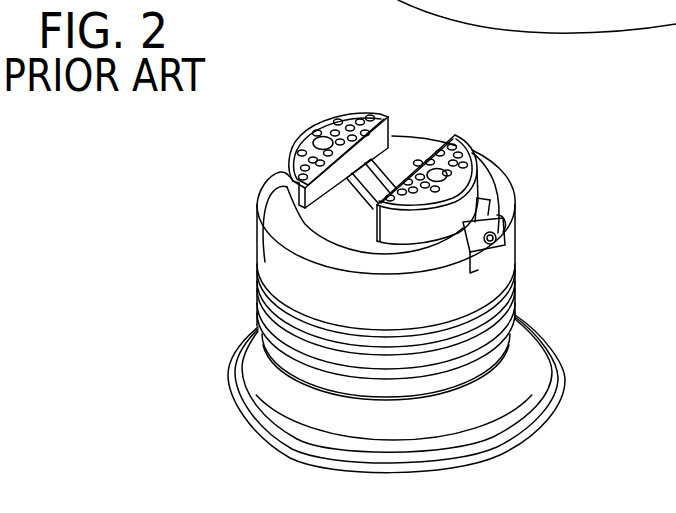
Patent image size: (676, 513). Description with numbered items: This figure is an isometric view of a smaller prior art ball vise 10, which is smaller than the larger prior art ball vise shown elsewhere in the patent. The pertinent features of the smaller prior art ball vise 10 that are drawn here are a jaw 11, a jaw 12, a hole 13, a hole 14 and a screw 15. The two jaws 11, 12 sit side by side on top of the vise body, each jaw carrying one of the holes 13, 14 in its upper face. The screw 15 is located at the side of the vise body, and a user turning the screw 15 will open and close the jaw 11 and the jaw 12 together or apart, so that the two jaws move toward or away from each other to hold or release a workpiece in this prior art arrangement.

The smaller prior art ball vise 10 is at (198, 156).
The jaw 11 is at (298, 197).
The jaw 12 is at (465, 195).
The hole 13 is at (323, 140).
The hole 14 is at (460, 160).
The screw 15 is at (497, 237).